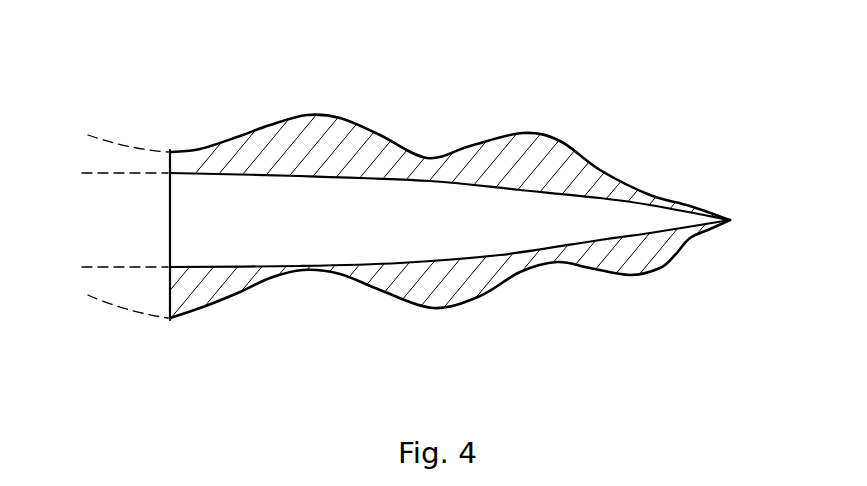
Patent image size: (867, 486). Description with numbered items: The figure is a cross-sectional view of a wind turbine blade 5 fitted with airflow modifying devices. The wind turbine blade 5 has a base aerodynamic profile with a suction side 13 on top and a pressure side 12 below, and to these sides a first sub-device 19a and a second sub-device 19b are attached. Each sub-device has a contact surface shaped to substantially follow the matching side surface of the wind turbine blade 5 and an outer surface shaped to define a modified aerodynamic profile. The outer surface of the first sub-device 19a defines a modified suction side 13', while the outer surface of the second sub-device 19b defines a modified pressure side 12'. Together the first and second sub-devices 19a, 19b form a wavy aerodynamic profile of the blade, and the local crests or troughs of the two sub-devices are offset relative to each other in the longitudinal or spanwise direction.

The wind turbine blade 5 is at (187, 206).
The pressure side 12 is at (450, 300).
The modified pressure side 12' is at (476, 333).
The suction side 13 is at (450, 148).
The modified suction side 13' is at (322, 99).
The first sub-device 19a is at (535, 155).
The second sub-device 19b is at (636, 263).